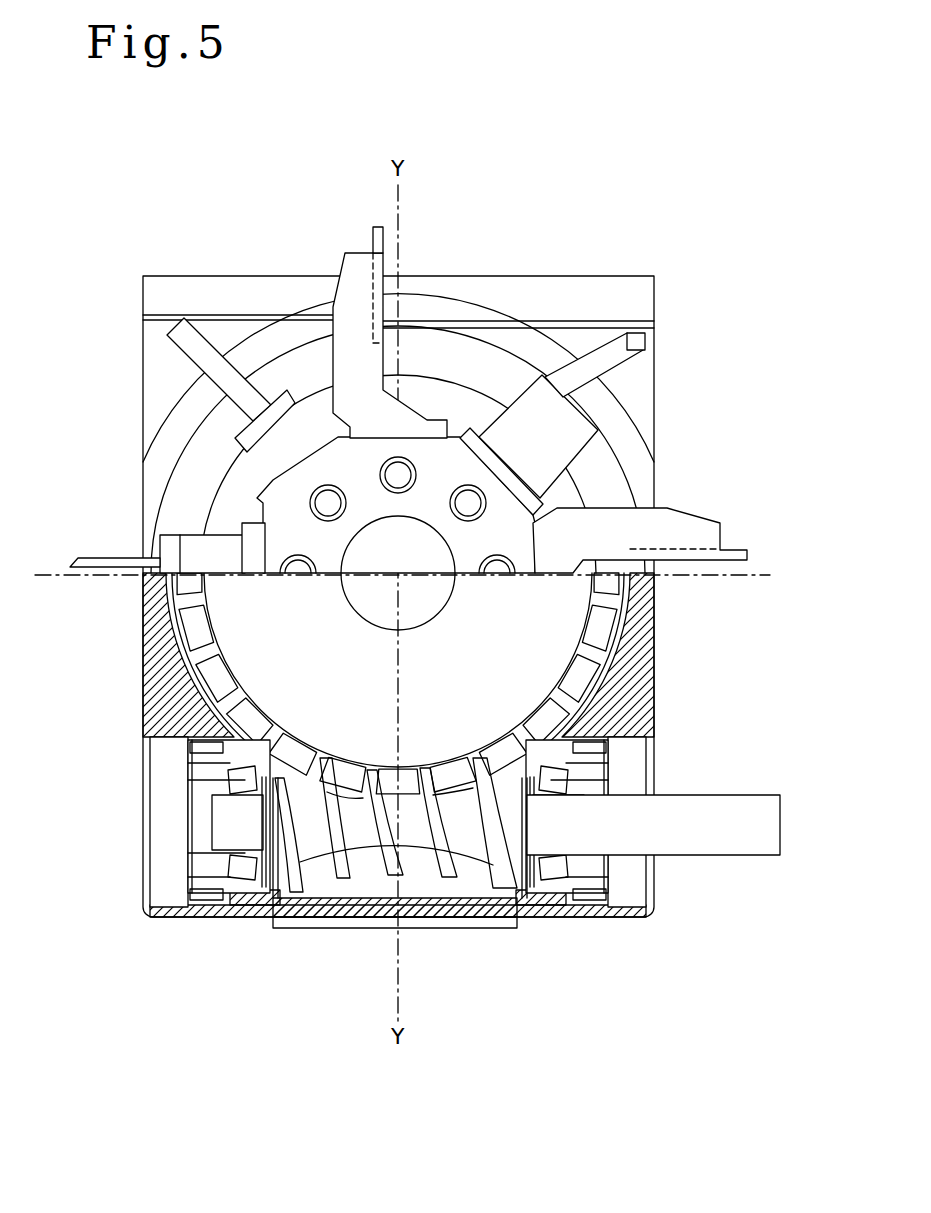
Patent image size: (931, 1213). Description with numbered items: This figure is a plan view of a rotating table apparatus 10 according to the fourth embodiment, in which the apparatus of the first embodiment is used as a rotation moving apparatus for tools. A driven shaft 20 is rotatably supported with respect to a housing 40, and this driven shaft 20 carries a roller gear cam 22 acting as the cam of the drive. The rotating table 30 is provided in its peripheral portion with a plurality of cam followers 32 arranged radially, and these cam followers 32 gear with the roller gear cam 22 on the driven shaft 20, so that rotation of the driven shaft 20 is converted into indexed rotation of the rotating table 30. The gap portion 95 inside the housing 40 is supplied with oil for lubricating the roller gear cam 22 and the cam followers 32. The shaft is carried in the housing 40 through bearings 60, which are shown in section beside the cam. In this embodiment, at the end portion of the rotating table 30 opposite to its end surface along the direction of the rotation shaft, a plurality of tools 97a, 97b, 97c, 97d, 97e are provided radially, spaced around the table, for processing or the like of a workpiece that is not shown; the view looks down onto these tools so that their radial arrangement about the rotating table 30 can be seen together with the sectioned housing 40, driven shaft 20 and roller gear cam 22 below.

The rotating table apparatus 10 is at (456, 268).
The driven shaft 20 is at (728, 843).
The roller gear cam 22 is at (420, 858).
The rotating table 30 is at (600, 455).
The cam followers 32 is at (192, 630).
The housing 40 is at (637, 692).
The bearing 60 is at (242, 900).
The gap portion 95 is at (370, 878).
The tool 97a is at (76, 556).
The tool 97b is at (180, 348).
The tool 97c is at (373, 238).
The tool 97d is at (623, 357).
The tool 97e is at (735, 548).